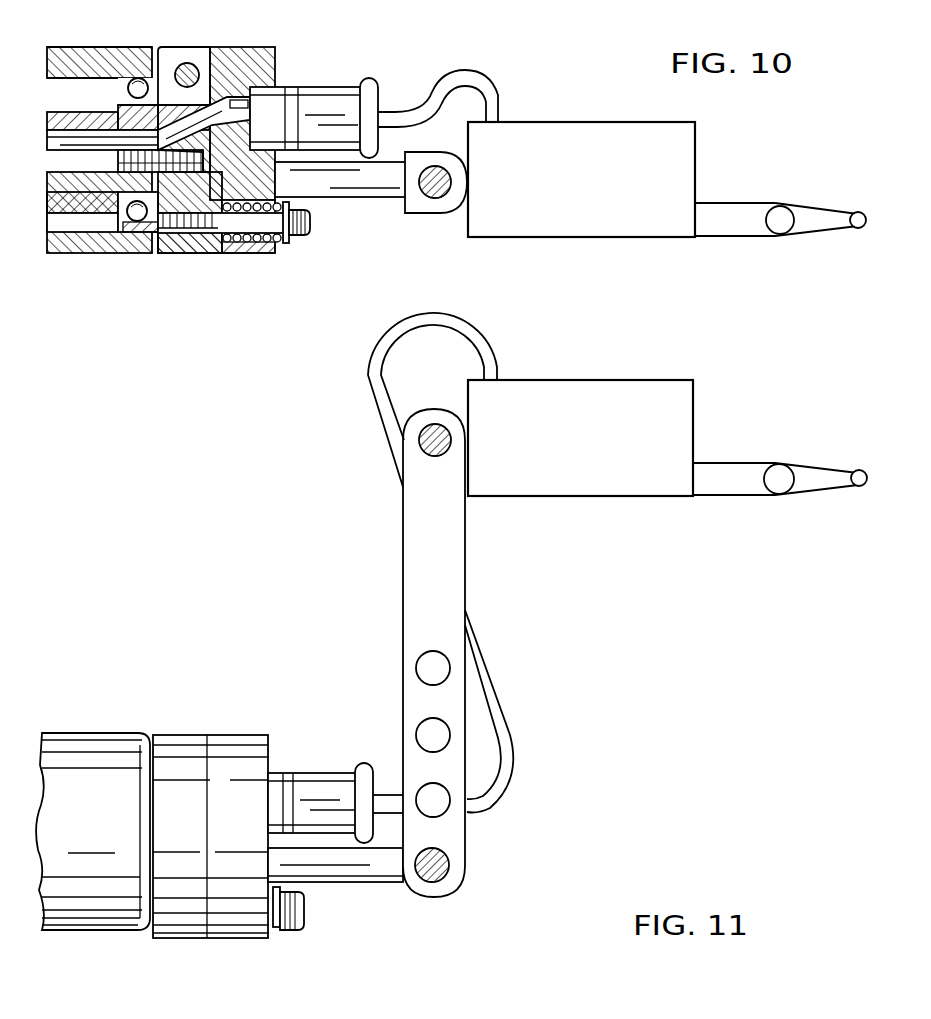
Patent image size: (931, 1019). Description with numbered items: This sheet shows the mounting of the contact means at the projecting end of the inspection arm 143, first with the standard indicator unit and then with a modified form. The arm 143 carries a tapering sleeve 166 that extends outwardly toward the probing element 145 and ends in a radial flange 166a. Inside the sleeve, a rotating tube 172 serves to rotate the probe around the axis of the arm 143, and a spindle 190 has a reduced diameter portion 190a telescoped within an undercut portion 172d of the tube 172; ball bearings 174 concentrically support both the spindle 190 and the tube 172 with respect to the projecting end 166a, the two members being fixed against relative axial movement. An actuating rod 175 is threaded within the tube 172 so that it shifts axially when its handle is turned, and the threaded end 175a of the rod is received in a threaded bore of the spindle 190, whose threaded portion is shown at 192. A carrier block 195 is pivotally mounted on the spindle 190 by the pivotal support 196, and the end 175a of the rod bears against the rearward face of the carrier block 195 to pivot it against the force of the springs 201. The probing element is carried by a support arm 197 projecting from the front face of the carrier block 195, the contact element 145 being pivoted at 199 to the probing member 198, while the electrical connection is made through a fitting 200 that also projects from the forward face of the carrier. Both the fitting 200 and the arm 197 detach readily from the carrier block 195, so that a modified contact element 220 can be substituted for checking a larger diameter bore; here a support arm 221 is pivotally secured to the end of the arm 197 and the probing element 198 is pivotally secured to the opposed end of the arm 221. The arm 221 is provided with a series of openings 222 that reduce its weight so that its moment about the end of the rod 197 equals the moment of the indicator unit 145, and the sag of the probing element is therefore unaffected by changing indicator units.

In FIG. 10, the inspection arm 143 is at (64, 45).
In FIG. 11, the inspection arm 143 is at (122, 935).
In FIG. 10, the probing element 145 is at (856, 228).
In FIG. 11, the probing element 145 is at (855, 487).
In FIG. 10, the tapering sleeve 166 is at (92, 160).
In FIG. 10, the radial flange 166a is at (99, 55).
In FIG. 11, the radial flange 166a is at (131, 732).
In FIG. 10, the rotating tube 172 is at (62, 118).
In FIG. 10, the undercut portion 172d is at (72, 200).
In FIG. 10, the ball bearings 174 is at (137, 84).
In FIG. 10, the actuating rod 175 is at (130, 222).
In FIG. 10, the threaded end 175a is at (215, 136).
In FIG. 10, the spindle 190 is at (157, 250).
In FIG. 11, the spindle 190 is at (170, 925).
In FIG. 10, the reduced diameter portion 190a is at (106, 176).
In FIG. 10, the threaded sleeve 192 is at (198, 200).
In FIG. 10, the carrier block 195 is at (258, 60).
In FIG. 11, the carrier block 195 is at (246, 734).
In FIG. 10, the pivotal support 196 is at (190, 72).
In FIG. 10, the support arm 197 is at (368, 197).
In FIG. 11, the support arm 197 is at (366, 882).
In FIG. 10, the probing member 198 is at (580, 222).
In FIG. 11, the probing member 198 is at (588, 482).
In FIG. 10, the pivot 199 is at (776, 219).
In FIG. 11, the pivot 199 is at (783, 487).
In FIG. 10, the fitting 200 is at (346, 95).
In FIG. 11, the fitting 200 is at (308, 772).
In FIG. 10, the springs 201 is at (279, 243).
In FIG. 11, the springs 201 is at (276, 927).
In FIG. 11, the contact element 220 is at (400, 578).
In FIG. 11, the support arm 221 is at (460, 603).
In FIG. 11, the openings 222 is at (443, 667).